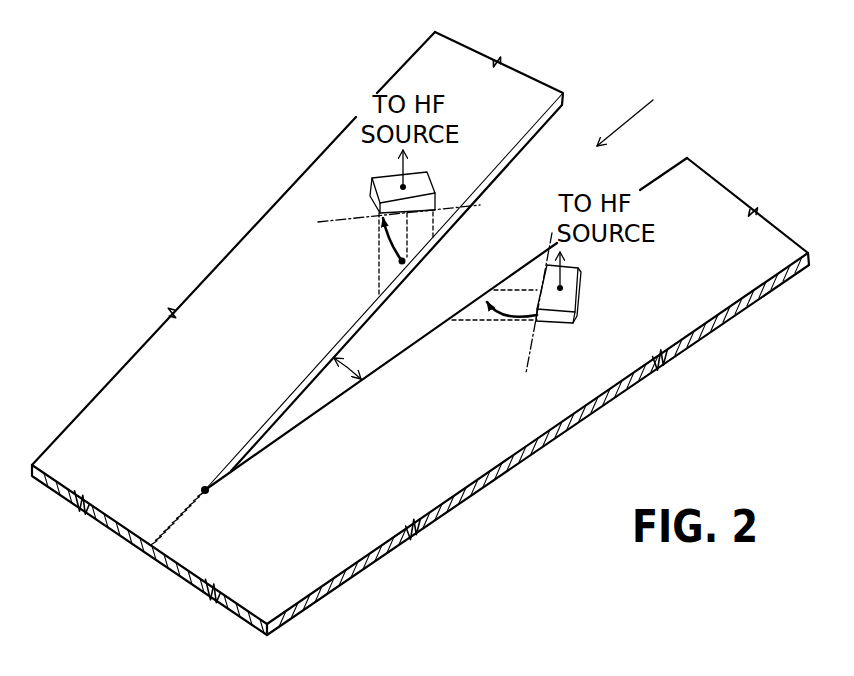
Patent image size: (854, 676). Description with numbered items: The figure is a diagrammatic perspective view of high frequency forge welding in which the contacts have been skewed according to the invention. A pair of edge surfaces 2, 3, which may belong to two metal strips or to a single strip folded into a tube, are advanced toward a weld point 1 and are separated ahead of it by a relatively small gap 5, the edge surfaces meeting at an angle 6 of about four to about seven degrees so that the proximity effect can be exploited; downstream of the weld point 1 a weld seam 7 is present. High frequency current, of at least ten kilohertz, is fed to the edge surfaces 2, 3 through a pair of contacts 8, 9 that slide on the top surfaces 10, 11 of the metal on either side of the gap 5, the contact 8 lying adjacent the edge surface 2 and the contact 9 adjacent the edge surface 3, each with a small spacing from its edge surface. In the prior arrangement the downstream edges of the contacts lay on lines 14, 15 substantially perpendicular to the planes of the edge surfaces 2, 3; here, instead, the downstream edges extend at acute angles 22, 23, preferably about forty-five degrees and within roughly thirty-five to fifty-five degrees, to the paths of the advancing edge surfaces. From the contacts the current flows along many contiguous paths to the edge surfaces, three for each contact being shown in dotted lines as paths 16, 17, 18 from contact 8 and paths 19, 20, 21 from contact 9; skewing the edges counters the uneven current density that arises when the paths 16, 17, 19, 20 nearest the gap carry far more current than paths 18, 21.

The weld point 1 is at (213, 490).
The edge surface 2 is at (550, 108).
The edge surface 3 is at (671, 168).
The gap 5 is at (397, 347).
The angle 6 is at (350, 388).
The weld seam 7 is at (181, 518).
The contact 8 is at (378, 182).
The contact 9 is at (572, 297).
The top surface 10 is at (247, 322).
The top surface 11 is at (472, 419).
The line 14 is at (335, 222).
The line 15 is at (532, 358).
The current path 16 is at (432, 218).
The current path 17 is at (407, 250).
The current path 18 is at (378, 278).
The current path 19 is at (544, 263).
The current path 20 is at (528, 288).
The current path 21 is at (478, 322).
The acute angle 22 is at (392, 248).
The acute angle 23 is at (500, 318).